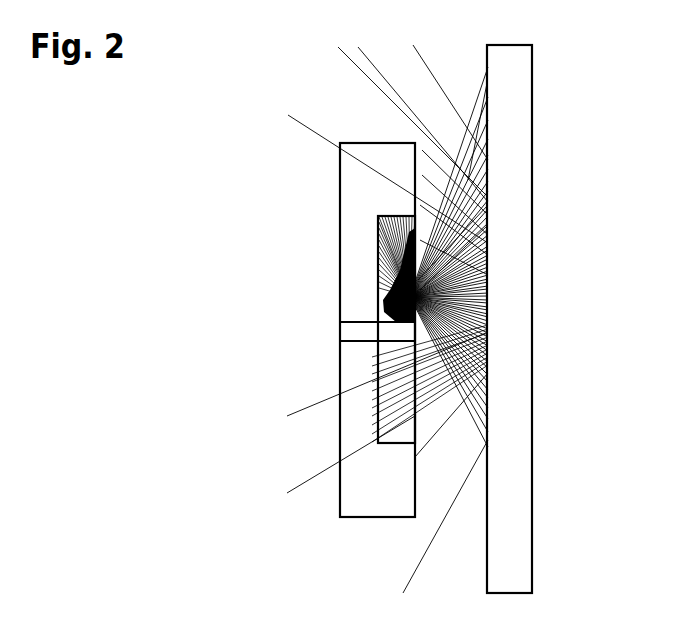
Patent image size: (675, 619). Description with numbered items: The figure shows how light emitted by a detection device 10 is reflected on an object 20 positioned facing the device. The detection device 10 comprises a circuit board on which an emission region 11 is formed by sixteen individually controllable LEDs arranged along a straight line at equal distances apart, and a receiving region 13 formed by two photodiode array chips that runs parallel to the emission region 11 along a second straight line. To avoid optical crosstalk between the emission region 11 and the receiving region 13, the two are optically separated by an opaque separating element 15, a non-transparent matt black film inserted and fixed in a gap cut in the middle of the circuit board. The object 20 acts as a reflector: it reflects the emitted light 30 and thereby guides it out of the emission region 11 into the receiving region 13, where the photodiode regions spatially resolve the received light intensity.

The detection device 10 is at (353, 204).
The emission region 11 is at (385, 306).
The receiving region 13 is at (388, 357).
The separating element 15 is at (390, 331).
The object 20 is at (520, 101).
The light 30 is at (364, 79).